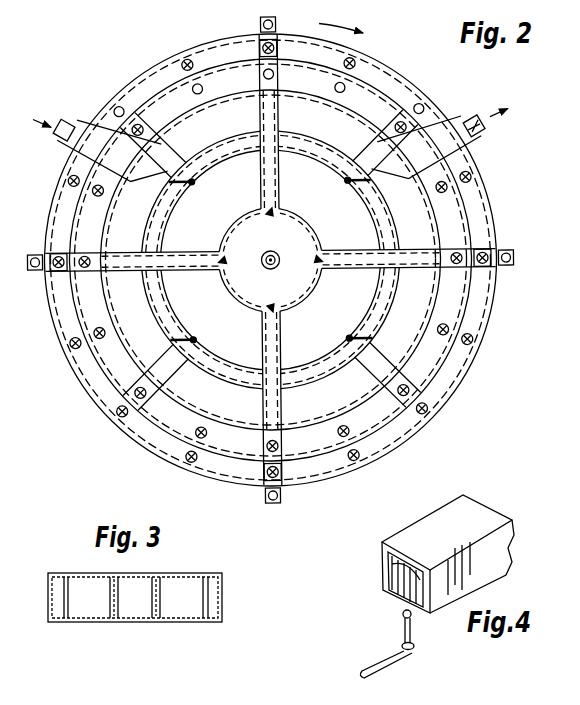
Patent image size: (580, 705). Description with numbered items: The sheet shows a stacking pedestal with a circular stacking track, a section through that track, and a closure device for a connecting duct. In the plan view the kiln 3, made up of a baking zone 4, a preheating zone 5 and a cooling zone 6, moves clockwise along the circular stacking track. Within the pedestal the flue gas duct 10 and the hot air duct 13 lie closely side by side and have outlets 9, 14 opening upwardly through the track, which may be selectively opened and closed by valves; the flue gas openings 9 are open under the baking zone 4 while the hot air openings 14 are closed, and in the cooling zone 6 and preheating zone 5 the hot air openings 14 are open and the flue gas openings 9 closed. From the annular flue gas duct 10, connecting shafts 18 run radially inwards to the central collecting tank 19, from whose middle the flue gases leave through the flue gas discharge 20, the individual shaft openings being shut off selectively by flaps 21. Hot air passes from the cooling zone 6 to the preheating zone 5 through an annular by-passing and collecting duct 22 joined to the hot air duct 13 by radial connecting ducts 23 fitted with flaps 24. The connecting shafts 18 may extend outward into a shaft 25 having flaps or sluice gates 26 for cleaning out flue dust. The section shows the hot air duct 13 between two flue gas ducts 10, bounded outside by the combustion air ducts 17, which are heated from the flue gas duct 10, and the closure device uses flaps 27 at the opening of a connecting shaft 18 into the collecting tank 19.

In FIG. 2, the kiln 3 is at (434, 87).
In FIG. 2, the baking zone 4 is at (230, 52).
In FIG. 2, the preheating zone 5 is at (386, 82).
In FIG. 2, the cooling zone 6 is at (140, 96).
In FIG. 2, the flue gas openings 9 is at (269, 91).
In FIG. 2, the flue gas duct 10 is at (448, 208).
In FIG. 3, the flue gas duct 10 is at (92, 607).
In FIG. 2, the hot air duct 13 is at (478, 221).
In FIG. 3, the hot air duct 13 is at (137, 607).
In FIG. 2, the hot air openings 14 is at (356, 51).
In FIG. 3, the combustion air ducts 17 is at (55, 610).
In FIG. 2, the connecting shafts 18 is at (279, 182).
In FIG. 4, the connecting shafts 18 is at (490, 556).
In FIG. 2, the collecting tank 19 is at (303, 238).
In FIG. 2, the flue gas discharge 20 is at (270, 254).
In FIG. 2, the flaps 21 is at (326, 266).
In FIG. 2, the by-passing and collecting duct 22 is at (156, 218).
In FIG. 2, the connecting ducts 23 is at (167, 159).
In FIG. 2, the flaps 24 is at (192, 180).
In FIG. 2, the shaft 25 is at (278, 15).
In FIG. 2, the flaps or sluice gates 26 is at (283, 18).
In FIG. 4, the flaps 27 is at (386, 586).